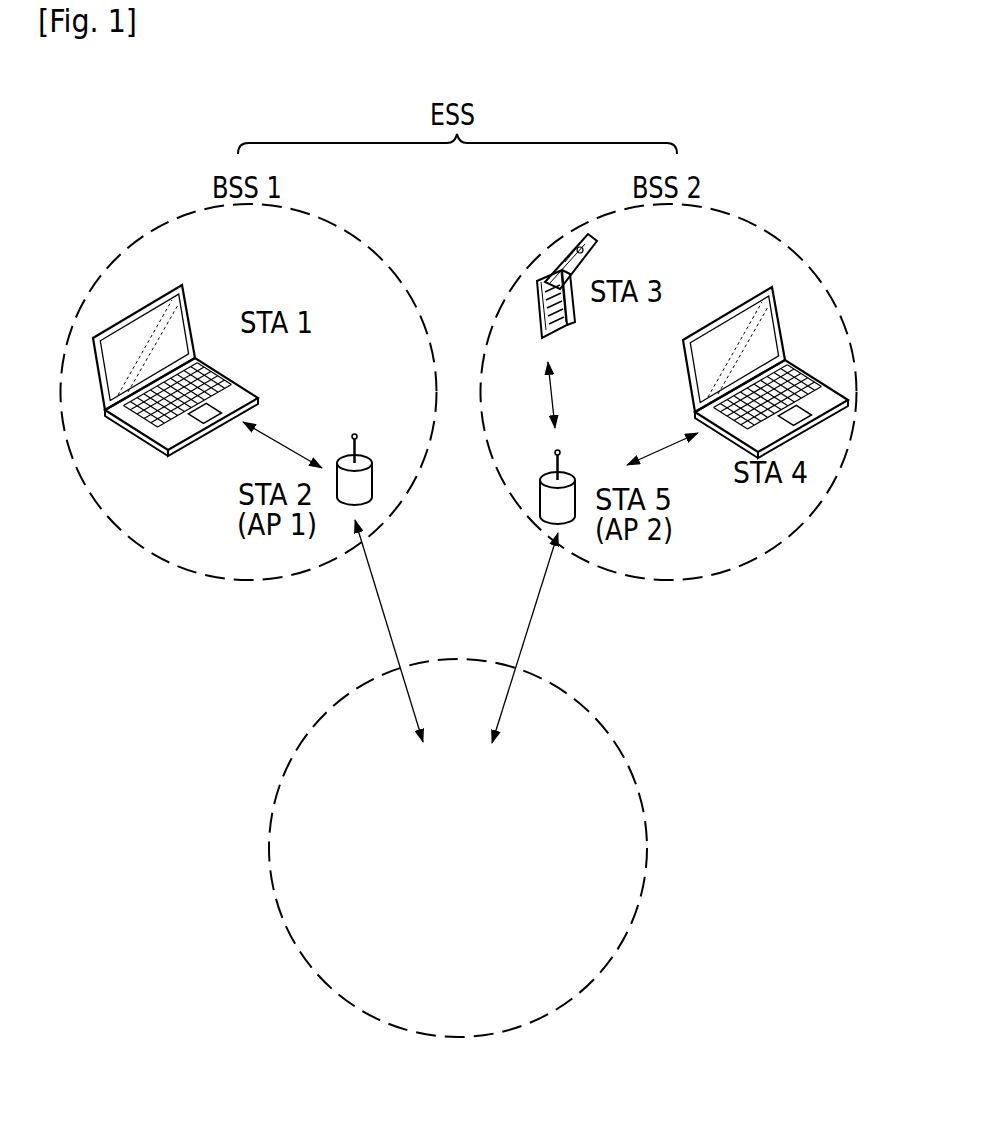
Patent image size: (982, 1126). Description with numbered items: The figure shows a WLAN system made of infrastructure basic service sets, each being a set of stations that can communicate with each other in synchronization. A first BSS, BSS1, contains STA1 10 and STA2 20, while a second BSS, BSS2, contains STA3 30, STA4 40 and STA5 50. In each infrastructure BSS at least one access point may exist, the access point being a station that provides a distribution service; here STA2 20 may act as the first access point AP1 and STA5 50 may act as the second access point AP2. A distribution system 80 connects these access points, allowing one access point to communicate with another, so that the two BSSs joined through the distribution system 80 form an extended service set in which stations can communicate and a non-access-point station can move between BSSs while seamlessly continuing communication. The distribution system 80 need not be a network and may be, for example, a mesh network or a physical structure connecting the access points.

The STA1 10 is at (157, 298).
The STA2 20 is at (367, 454).
The STA3 30 is at (594, 251).
The STA4 40 is at (748, 301).
The STA5 50 is at (544, 471).
The distribution system 80 is at (578, 702).